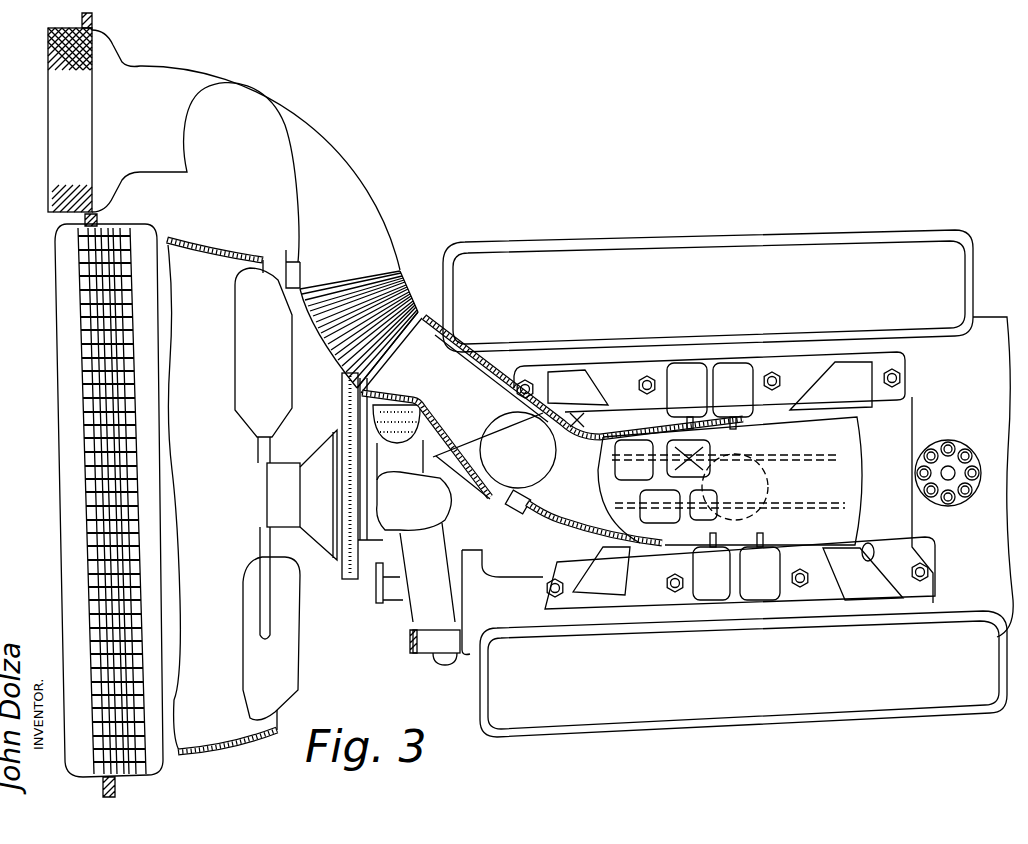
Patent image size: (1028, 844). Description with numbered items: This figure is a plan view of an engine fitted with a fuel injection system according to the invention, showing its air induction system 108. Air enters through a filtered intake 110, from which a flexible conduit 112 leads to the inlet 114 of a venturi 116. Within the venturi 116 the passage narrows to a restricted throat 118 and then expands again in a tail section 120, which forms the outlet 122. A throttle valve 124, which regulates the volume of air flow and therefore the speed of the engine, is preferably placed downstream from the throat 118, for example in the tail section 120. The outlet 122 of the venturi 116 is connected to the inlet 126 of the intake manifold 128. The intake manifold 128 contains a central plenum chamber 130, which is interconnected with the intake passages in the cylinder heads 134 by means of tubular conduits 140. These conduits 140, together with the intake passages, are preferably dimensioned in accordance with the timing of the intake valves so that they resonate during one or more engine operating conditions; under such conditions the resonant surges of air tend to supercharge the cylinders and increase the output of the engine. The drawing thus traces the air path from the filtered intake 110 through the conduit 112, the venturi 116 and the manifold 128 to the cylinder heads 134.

The induction system 108 is at (406, 248).
The filtered intake 110 is at (58, 152).
The flexible conduit 112 is at (340, 150).
The inlet 114 is at (426, 312).
The venturi 116 is at (514, 400).
The restricted throat 118 is at (491, 365).
The tail section 120 is at (522, 366).
The outlet 122 is at (578, 410).
The throttle valve 124 is at (540, 465).
The inlet 126 is at (537, 512).
The intake manifold 128 is at (854, 443).
The central plenum chamber 130 is at (650, 540).
The cylinder heads 134 is at (470, 652).
The tubular conduits 140 is at (723, 368).